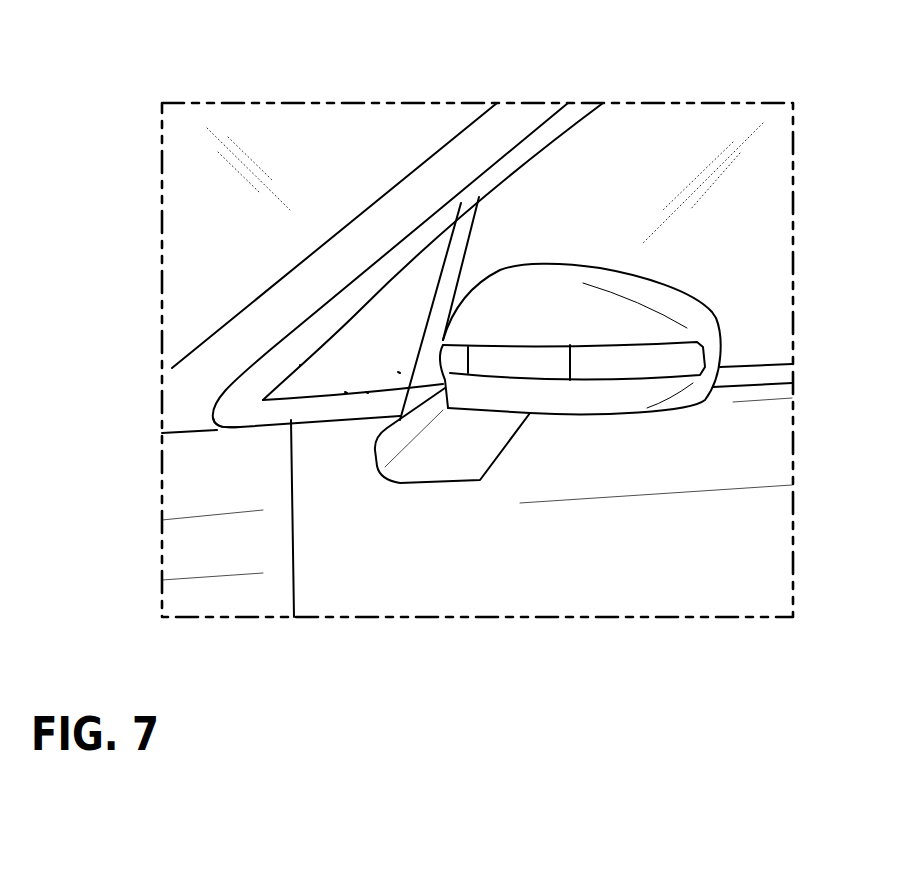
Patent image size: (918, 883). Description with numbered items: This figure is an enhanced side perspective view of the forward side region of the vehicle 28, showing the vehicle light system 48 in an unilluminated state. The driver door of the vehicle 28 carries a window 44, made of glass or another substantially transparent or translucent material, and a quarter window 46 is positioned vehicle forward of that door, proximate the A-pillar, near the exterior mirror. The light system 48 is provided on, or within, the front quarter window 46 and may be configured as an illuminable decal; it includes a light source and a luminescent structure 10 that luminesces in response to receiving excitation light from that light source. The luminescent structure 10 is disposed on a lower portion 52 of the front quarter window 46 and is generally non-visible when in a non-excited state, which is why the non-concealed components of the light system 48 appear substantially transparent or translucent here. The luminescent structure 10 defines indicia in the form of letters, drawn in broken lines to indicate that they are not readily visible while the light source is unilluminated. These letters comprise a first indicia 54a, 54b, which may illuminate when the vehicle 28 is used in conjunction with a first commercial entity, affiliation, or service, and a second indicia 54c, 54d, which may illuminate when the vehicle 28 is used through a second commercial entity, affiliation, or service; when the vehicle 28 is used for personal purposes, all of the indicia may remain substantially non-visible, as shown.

The luminescent structure 10 is at (306, 409).
The vehicle 28 is at (567, 100).
The window 44 is at (407, 255).
The quarter window 46 is at (362, 335).
The vehicle light system 48 is at (276, 382).
The lower portion 52 is at (325, 418).
The first indicia 54a is at (262, 425).
The first indicia 54b is at (345, 392).
The second indicia 54c is at (365, 392).
The second indicia 54d is at (400, 372).